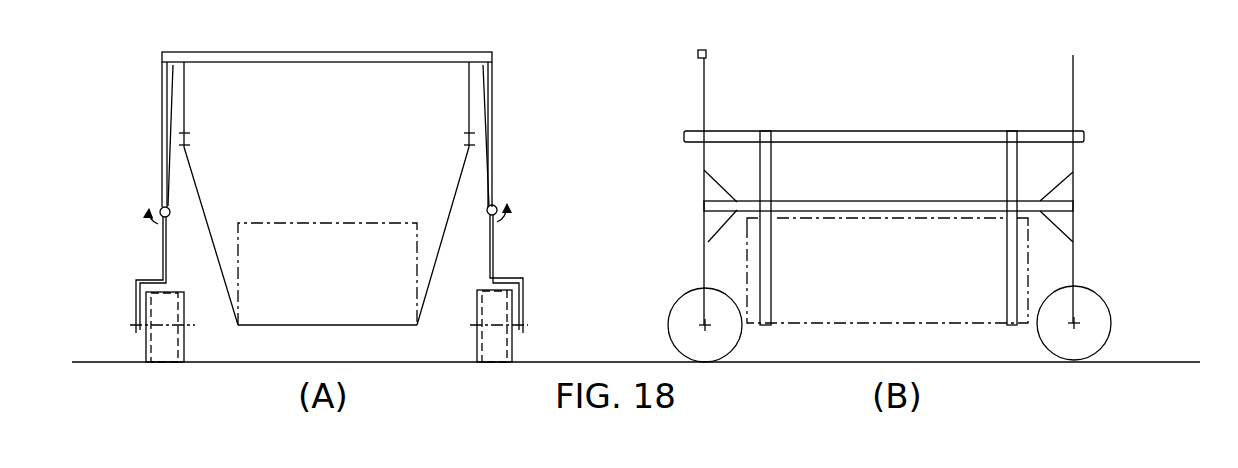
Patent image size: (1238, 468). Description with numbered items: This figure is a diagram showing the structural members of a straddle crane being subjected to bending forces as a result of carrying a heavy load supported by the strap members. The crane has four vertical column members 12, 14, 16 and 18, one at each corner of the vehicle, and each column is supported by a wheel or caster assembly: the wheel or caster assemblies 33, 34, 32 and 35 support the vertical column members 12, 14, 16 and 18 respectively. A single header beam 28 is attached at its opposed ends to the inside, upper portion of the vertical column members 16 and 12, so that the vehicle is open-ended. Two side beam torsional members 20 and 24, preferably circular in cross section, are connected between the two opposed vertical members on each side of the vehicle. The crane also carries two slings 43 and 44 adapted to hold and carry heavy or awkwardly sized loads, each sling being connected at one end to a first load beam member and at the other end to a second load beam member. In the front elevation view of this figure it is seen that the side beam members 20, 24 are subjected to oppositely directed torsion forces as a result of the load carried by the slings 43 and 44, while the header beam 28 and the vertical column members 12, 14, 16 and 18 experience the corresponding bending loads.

The vertical column member 12 is at (491, 95).
The vertical column member 14 is at (489, 76).
The vertical column member 16 is at (162, 95).
The vertical column member 18 is at (173, 93).
The side beam torsional member 20 is at (499, 206).
The side beam torsional member 24 is at (157, 206).
The header beam 28 is at (355, 60).
The wheel or caster assembly 32 is at (190, 353).
The wheel or caster assembly 33 is at (474, 352).
The wheel or caster assembly 34 is at (518, 353).
The wheel or caster assembly 35 is at (143, 352).
The sling 43 is at (203, 210).
The sling 44 is at (1008, 252).